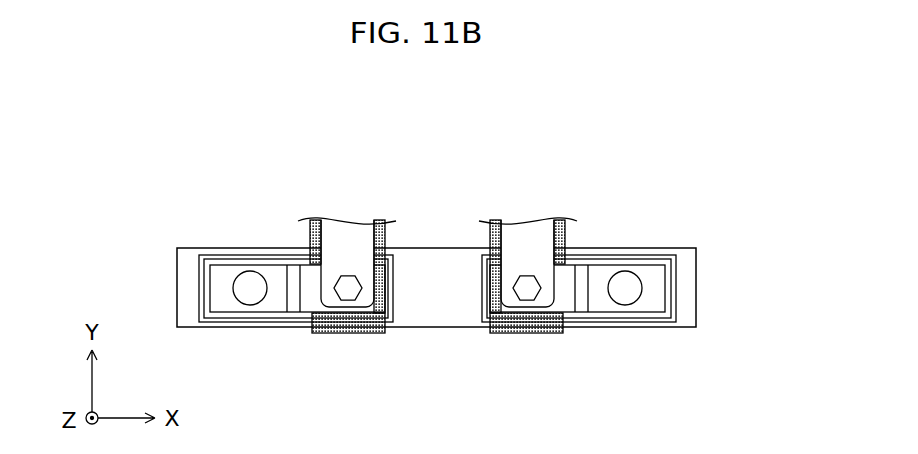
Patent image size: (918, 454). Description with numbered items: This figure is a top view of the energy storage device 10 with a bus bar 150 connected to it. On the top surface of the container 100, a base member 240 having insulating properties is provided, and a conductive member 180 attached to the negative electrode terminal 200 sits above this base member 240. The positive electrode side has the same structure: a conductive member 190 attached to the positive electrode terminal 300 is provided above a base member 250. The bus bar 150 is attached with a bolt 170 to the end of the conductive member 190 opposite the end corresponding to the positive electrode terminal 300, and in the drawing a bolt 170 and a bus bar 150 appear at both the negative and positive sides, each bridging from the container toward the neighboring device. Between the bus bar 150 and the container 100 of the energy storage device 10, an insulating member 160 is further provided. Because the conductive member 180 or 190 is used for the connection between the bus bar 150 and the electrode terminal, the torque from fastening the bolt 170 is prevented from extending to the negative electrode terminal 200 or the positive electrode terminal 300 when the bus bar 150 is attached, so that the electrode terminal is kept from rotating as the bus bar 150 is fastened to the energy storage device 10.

The energy storage device 10 is at (642, 155).
The container 100 is at (696, 313).
The bus bar 150 is at (333, 237).
The insulating member 160 is at (340, 325).
The bolt 170 is at (352, 288).
The conductive member 180 is at (270, 305).
The conductive member 190 is at (605, 304).
The negative electrode terminal 200 is at (248, 278).
The base member 240 is at (200, 272).
The base member 250 is at (676, 272).
The positive electrode terminal 300 is at (626, 278).